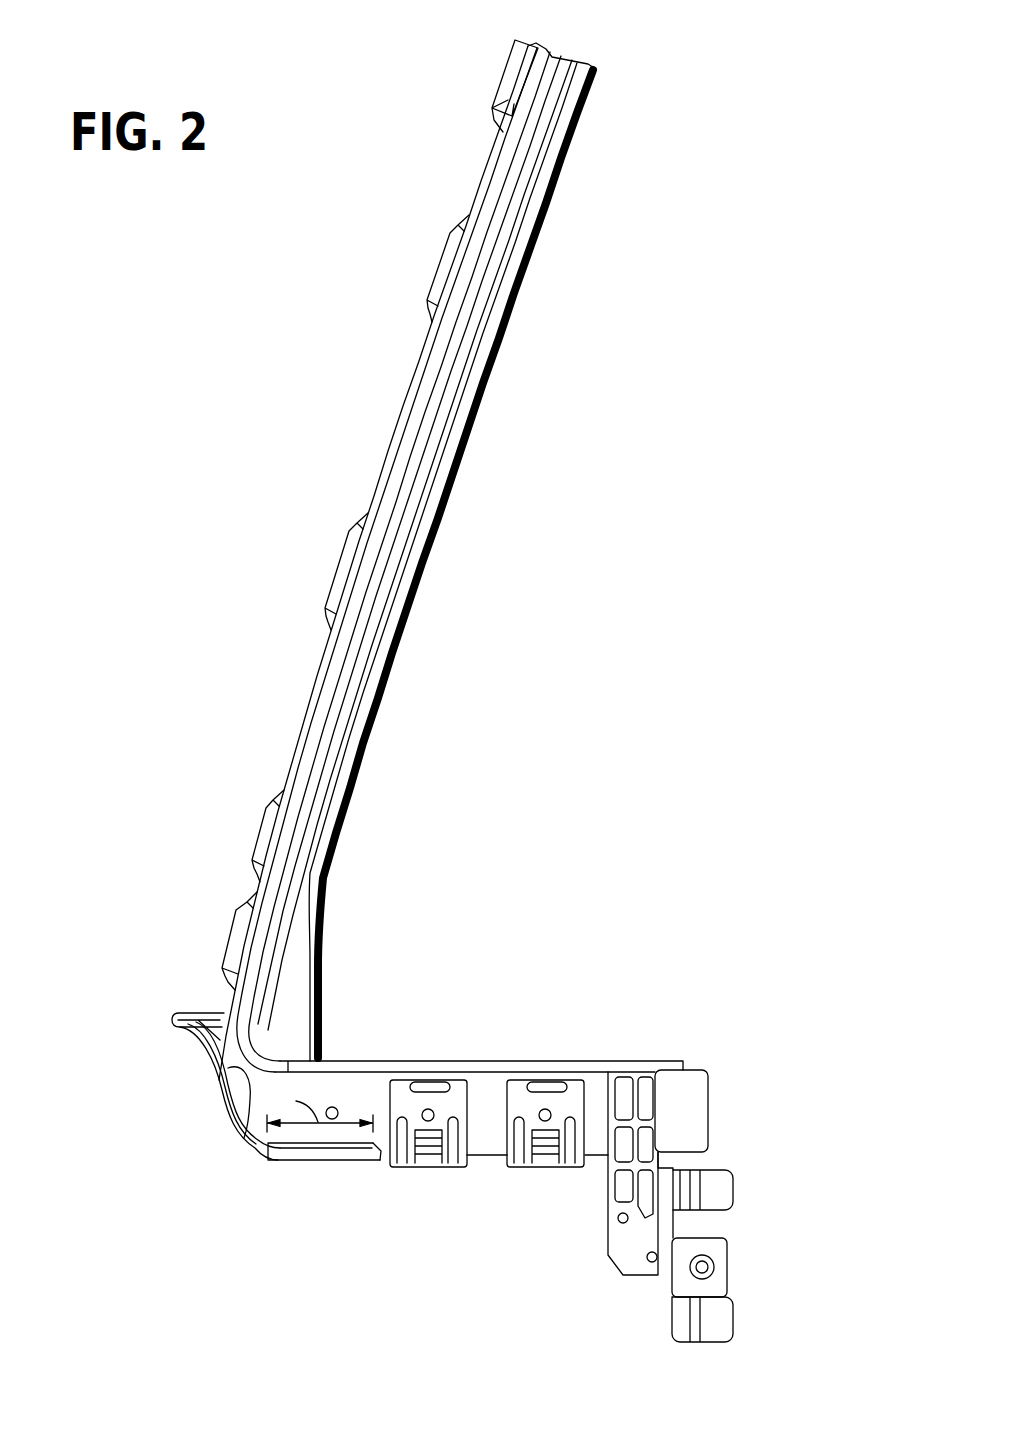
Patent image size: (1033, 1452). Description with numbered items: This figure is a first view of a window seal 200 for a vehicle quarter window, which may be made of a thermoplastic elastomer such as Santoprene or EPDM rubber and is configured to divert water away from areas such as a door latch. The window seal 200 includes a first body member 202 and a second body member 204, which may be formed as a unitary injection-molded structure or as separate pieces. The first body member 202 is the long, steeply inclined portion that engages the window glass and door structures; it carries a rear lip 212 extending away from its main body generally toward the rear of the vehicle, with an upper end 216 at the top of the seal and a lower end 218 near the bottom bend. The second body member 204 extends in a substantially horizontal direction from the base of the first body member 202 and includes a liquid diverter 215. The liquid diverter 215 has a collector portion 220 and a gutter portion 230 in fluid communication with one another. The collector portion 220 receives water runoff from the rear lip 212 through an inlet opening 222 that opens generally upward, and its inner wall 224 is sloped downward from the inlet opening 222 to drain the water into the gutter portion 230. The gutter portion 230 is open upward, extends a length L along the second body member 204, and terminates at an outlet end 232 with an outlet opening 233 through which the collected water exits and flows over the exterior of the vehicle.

The window seal 200 is at (762, 147).
The first body member 202 is at (340, 402).
The second body member 204 is at (428, 1200).
The rear lip 212 is at (303, 700).
The liquid diverter 215 is at (208, 1152).
The upper end 216 is at (543, 40).
The lower end 218 is at (218, 985).
The collector portion 220 is at (174, 1052).
The inlet opening 222 is at (170, 1001).
The inner wall 224 is at (250, 1132).
The gutter portion 230 is at (320, 1176).
The outlet end 232 is at (380, 1176).
The outlet opening 233 is at (383, 1125).